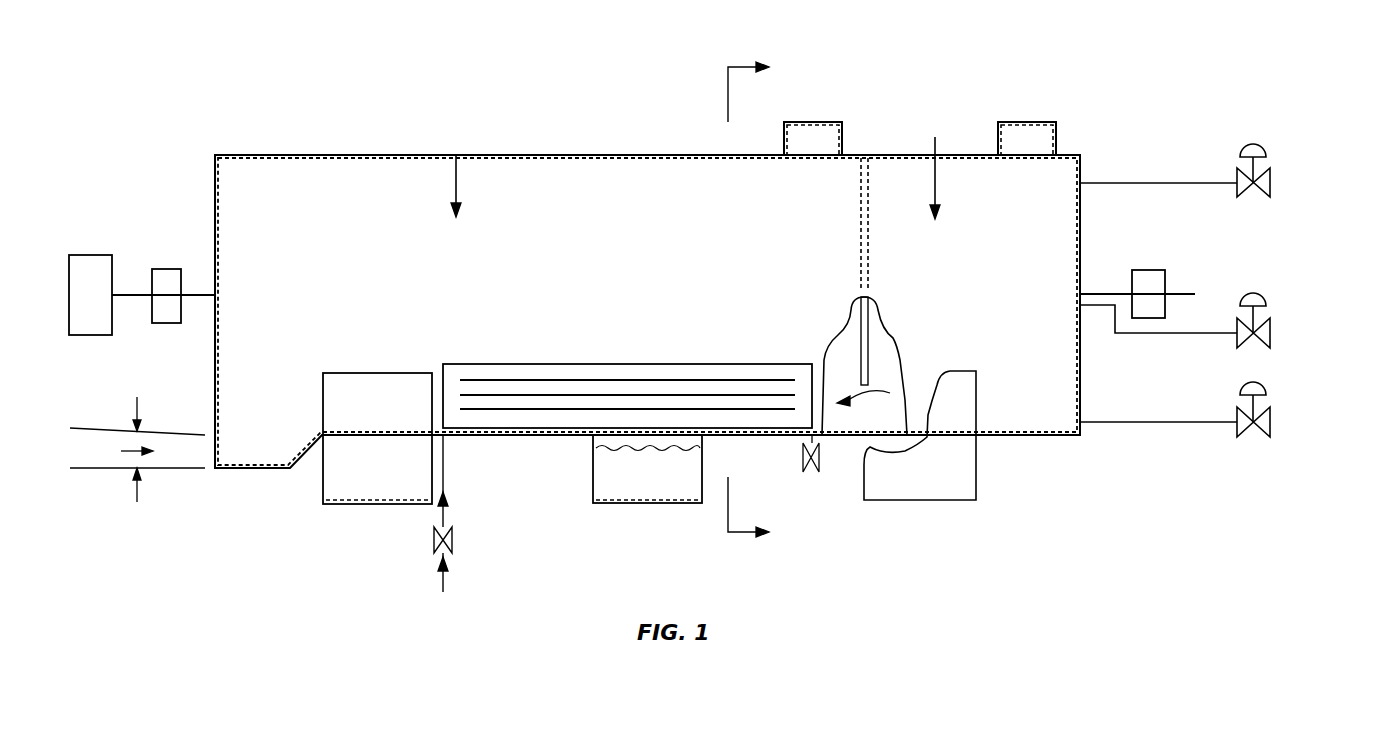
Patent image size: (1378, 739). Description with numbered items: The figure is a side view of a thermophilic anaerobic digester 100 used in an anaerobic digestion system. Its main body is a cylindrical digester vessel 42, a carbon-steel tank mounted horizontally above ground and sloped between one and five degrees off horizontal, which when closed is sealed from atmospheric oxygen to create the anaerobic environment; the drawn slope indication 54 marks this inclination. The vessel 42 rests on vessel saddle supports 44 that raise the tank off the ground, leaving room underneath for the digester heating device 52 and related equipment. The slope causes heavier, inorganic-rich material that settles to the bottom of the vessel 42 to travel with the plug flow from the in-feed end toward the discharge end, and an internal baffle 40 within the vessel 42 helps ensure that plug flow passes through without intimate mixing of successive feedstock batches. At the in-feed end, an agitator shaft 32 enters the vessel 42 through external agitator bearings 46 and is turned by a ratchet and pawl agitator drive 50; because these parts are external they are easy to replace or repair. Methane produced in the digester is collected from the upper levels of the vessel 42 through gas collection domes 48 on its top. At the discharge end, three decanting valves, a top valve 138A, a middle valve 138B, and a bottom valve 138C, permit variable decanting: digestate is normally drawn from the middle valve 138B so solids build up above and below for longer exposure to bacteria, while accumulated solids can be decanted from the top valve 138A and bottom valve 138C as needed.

The thermophilic anaerobic digester 100 is at (520, 152).
The digester vessel 42 is at (1062, 388).
The gas collection domes 48 is at (812, 122).
The ratchet and pawl agitator drive 50 is at (92, 255).
The agitator shaft 32 is at (135, 293).
The external agitator bearings 46 is at (165, 269).
The inclined floor 54 is at (88, 428).
The vessel saddle supports 44 is at (378, 504).
The digester heating device 52 is at (625, 364).
The digester vessel internal baffle 40 is at (863, 390).
The top decanting valve 138A is at (1253, 140).
The middle decanting valve 138B is at (1272, 333).
The bottom decanting valve 138C is at (1272, 420).